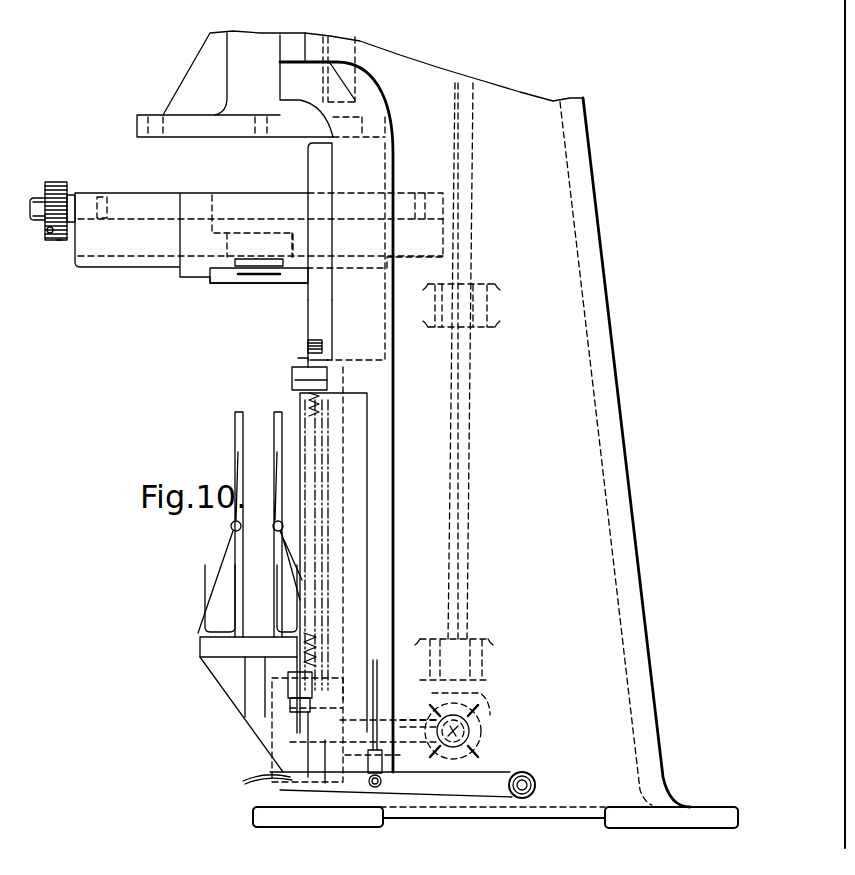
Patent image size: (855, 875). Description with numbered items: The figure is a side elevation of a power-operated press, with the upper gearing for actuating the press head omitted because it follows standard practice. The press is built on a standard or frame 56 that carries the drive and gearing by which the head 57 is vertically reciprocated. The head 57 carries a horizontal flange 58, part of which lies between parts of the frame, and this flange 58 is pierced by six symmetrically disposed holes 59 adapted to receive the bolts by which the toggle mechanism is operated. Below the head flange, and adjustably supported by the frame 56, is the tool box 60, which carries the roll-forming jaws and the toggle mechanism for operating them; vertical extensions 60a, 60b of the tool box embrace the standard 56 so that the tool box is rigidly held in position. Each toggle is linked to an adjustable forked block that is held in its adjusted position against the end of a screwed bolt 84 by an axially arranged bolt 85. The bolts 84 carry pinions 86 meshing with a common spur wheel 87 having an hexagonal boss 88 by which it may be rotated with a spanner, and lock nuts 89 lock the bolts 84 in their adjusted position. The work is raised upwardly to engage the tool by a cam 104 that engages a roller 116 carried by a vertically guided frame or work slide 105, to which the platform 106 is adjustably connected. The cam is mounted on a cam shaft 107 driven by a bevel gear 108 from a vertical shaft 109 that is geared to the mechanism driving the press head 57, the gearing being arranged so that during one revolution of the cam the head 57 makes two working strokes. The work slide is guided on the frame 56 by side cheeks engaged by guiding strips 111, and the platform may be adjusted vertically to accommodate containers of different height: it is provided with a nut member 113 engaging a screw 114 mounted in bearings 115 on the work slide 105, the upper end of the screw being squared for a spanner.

The standard or frame 56 is at (495, 430).
The head 57 is at (233, 88).
The horizontal flange 58 is at (207, 132).
The holes 59 is at (155, 133).
The tool box 60 is at (141, 250).
The vertical extension of the tool box 60a is at (337, 165).
The vertical extension of the tool box 60b is at (307, 313).
The screwed bolt 84 is at (85, 207).
The axially arranged bolt 85 is at (50, 233).
The pinion 86 is at (58, 243).
The spur wheel 87 is at (58, 182).
The hexagonal boss 88 is at (42, 196).
The lock nut 89 is at (71, 222).
The cam 104 is at (272, 697).
The work slide 105 is at (340, 593).
The platform 106 is at (227, 648).
The cam shaft 107 is at (400, 773).
The bevel gear 108 is at (467, 745).
The vertical shaft 109 is at (457, 518).
The guiding strip 111 is at (357, 533).
The nut member 113 is at (290, 667).
The screw 114 is at (312, 503).
The bearing 115 is at (297, 371).
The roller 116 is at (320, 665).